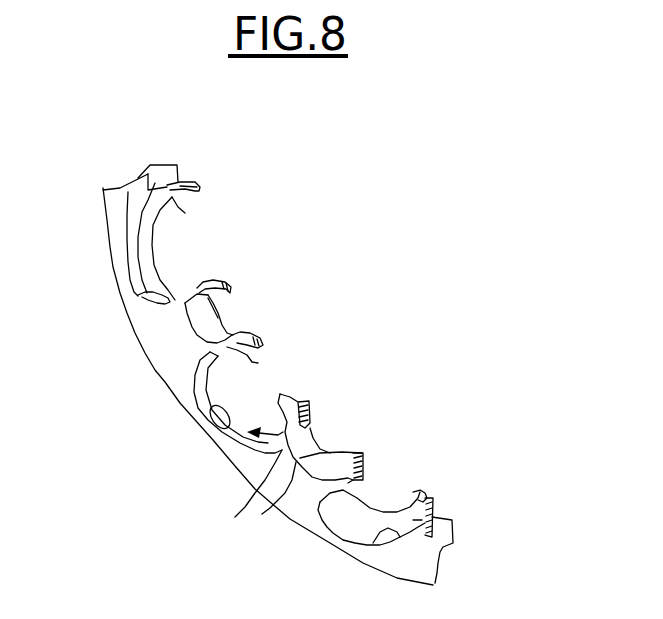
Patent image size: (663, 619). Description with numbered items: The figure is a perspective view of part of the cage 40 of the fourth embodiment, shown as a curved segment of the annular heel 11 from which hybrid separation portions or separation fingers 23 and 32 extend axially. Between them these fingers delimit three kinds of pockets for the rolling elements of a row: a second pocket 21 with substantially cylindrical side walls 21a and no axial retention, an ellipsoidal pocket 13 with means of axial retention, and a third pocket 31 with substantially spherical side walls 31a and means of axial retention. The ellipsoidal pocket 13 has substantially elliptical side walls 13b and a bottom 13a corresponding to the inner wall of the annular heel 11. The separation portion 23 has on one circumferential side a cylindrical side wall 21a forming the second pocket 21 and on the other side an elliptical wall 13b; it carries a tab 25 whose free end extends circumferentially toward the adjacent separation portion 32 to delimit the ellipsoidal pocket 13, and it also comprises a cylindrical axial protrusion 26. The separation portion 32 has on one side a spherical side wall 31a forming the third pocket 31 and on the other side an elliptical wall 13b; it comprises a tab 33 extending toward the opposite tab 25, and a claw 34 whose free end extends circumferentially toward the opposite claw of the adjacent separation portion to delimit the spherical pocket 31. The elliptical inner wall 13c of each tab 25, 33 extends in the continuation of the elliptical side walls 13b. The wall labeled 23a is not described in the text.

The cage 40 is at (334, 130).
The annular heel 11 is at (202, 417).
The second pocket 21 is at (140, 263).
The cylindrical side wall 21a is at (185, 213).
The hybrid separation portion 23 is at (173, 335).
The engaging portion of second tab 23a is at (231, 302).
The tab 25 is at (240, 333).
The axial protrusion 26 is at (202, 280).
The ellipsoidal pocket 13 is at (283, 441).
The bottom of the ellipsoidal pocket 13a is at (217, 433).
The elliptical side wall 13b is at (210, 387).
The elliptical inner wall of tab 13c is at (258, 362).
The separation portion 32 is at (262, 514).
The tab 33 is at (313, 427).
The claw 34 is at (342, 452).
The third pocket 31 is at (362, 523).
The spherical side wall 31a is at (375, 548).